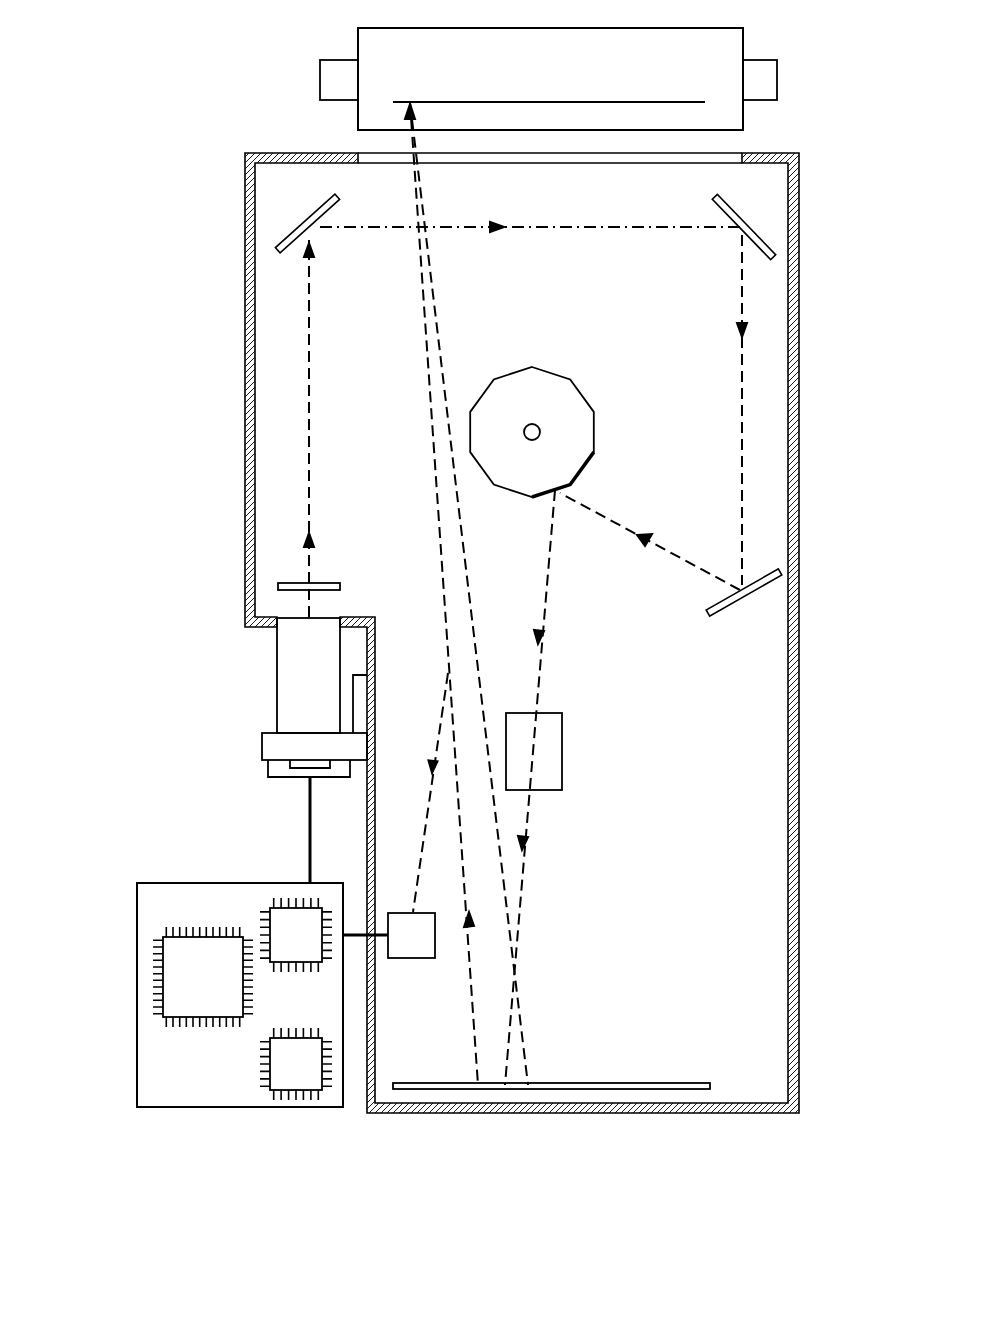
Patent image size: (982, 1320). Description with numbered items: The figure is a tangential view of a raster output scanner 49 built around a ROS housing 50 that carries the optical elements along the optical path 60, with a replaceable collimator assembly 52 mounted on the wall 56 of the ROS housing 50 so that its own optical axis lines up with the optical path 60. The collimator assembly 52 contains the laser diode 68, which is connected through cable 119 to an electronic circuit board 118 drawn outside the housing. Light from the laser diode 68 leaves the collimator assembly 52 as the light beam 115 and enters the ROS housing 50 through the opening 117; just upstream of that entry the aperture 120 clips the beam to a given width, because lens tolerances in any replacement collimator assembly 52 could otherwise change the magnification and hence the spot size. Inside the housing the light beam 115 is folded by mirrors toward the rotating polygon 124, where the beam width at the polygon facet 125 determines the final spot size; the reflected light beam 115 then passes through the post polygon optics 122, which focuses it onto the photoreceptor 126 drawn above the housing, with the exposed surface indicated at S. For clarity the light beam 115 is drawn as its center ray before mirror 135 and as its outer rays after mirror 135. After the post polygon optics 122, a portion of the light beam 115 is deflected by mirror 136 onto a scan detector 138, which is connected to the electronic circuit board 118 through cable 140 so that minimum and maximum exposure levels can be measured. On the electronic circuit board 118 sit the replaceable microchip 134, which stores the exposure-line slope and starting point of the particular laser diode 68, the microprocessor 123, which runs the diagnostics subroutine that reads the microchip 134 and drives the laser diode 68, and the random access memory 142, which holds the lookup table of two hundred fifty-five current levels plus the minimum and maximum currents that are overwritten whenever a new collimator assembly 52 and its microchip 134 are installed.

The raster output scanner 49 is at (232, 122).
The ROS housing 50 is at (799, 835).
The collimator assembly 52 is at (248, 667).
The wall 56 is at (367, 803).
The optical path 60 is at (313, 414).
The laser diode 68 is at (288, 762).
The light beam 115 is at (640, 228).
The opening 117 is at (287, 618).
The electronic circuit board 118 is at (155, 870).
The cable 119 is at (307, 785).
The aperture 120 is at (343, 585).
The post polygon optics 122 is at (560, 770).
The microprocessor 123 is at (293, 925).
The polygon 124 is at (575, 402).
The polygon facet 125 is at (553, 494).
The photoreceptor 126 is at (607, 28).
The microchip 134 is at (226, 992).
The mirror 135 is at (560, 1083).
The mirror 136 is at (448, 673).
The scan detector 138 is at (398, 958).
The cable 140 is at (350, 940).
The random access memory 142 is at (290, 1073).
The marking surface S is at (418, 100).